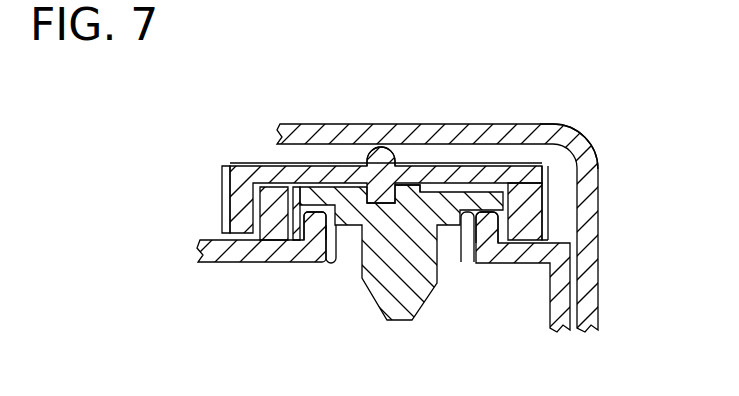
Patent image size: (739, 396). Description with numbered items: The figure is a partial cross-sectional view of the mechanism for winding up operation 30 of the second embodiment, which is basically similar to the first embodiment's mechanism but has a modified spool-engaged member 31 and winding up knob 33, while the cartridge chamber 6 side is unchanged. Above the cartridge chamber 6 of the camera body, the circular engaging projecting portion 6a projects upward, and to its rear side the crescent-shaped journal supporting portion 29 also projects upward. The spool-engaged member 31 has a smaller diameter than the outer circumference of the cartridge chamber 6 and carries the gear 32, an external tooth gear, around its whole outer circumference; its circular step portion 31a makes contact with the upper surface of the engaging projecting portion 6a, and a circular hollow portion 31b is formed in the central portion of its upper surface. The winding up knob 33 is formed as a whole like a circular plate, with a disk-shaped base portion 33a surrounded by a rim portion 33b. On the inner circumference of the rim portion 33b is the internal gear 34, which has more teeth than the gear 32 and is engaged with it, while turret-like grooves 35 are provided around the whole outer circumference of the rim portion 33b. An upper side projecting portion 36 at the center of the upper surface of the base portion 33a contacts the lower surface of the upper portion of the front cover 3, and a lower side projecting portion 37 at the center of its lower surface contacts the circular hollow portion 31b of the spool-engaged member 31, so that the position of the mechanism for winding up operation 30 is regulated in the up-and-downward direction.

The front cover 3 is at (572, 132).
The cartridge chamber 6 is at (200, 240).
The engaging projecting portion 6a is at (318, 231).
The journal supporting portion 29 is at (275, 204).
The mechanism for winding up operation 30 is at (207, 170).
The spool-engaged member 31 is at (424, 303).
The circular step portion 31a is at (465, 221).
The circular hollow portion 31b is at (404, 200).
The gear 32 is at (503, 191).
The winding up knob 33 is at (453, 167).
The disk-shaped base portion 33a is at (241, 166).
The rim portion 33b is at (559, 127).
The internal gear 34 is at (520, 242).
The turret-like grooves 35 is at (547, 221).
The upper side projecting portion 36 is at (398, 150).
The lower side projecting portion 37 is at (362, 227).